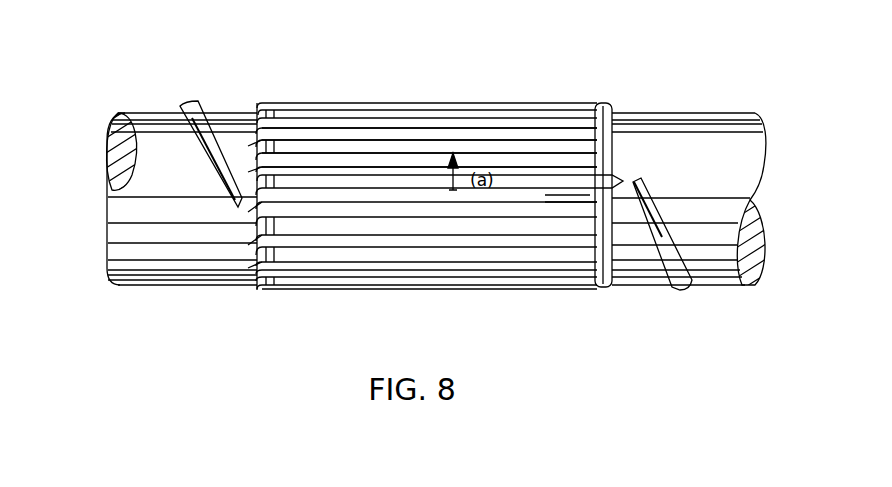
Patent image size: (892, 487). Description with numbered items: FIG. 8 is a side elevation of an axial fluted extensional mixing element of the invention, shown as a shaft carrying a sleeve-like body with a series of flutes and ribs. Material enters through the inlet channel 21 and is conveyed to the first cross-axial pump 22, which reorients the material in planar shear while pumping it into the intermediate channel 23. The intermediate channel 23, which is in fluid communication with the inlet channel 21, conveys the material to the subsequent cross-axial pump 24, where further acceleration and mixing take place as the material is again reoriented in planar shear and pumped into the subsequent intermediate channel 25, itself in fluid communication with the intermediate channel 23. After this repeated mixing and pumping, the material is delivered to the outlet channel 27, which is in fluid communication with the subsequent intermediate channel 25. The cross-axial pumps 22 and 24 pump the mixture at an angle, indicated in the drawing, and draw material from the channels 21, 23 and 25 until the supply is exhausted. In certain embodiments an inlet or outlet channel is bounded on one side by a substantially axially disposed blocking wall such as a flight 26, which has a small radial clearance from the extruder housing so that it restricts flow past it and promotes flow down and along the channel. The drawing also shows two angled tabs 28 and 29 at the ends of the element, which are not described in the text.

The inlet channel 21 is at (612, 172).
The first cross-axial pump 22 is at (556, 160).
The intermediate channel 23 is at (532, 150).
The subsequent cross-axial pump 24 is at (355, 107).
The subsequent intermediate channel 25 is at (403, 108).
The flight 26 is at (545, 195).
The outlet channel 27 is at (318, 105).
The blade 28 is at (655, 250).
The blade 29 is at (229, 146).